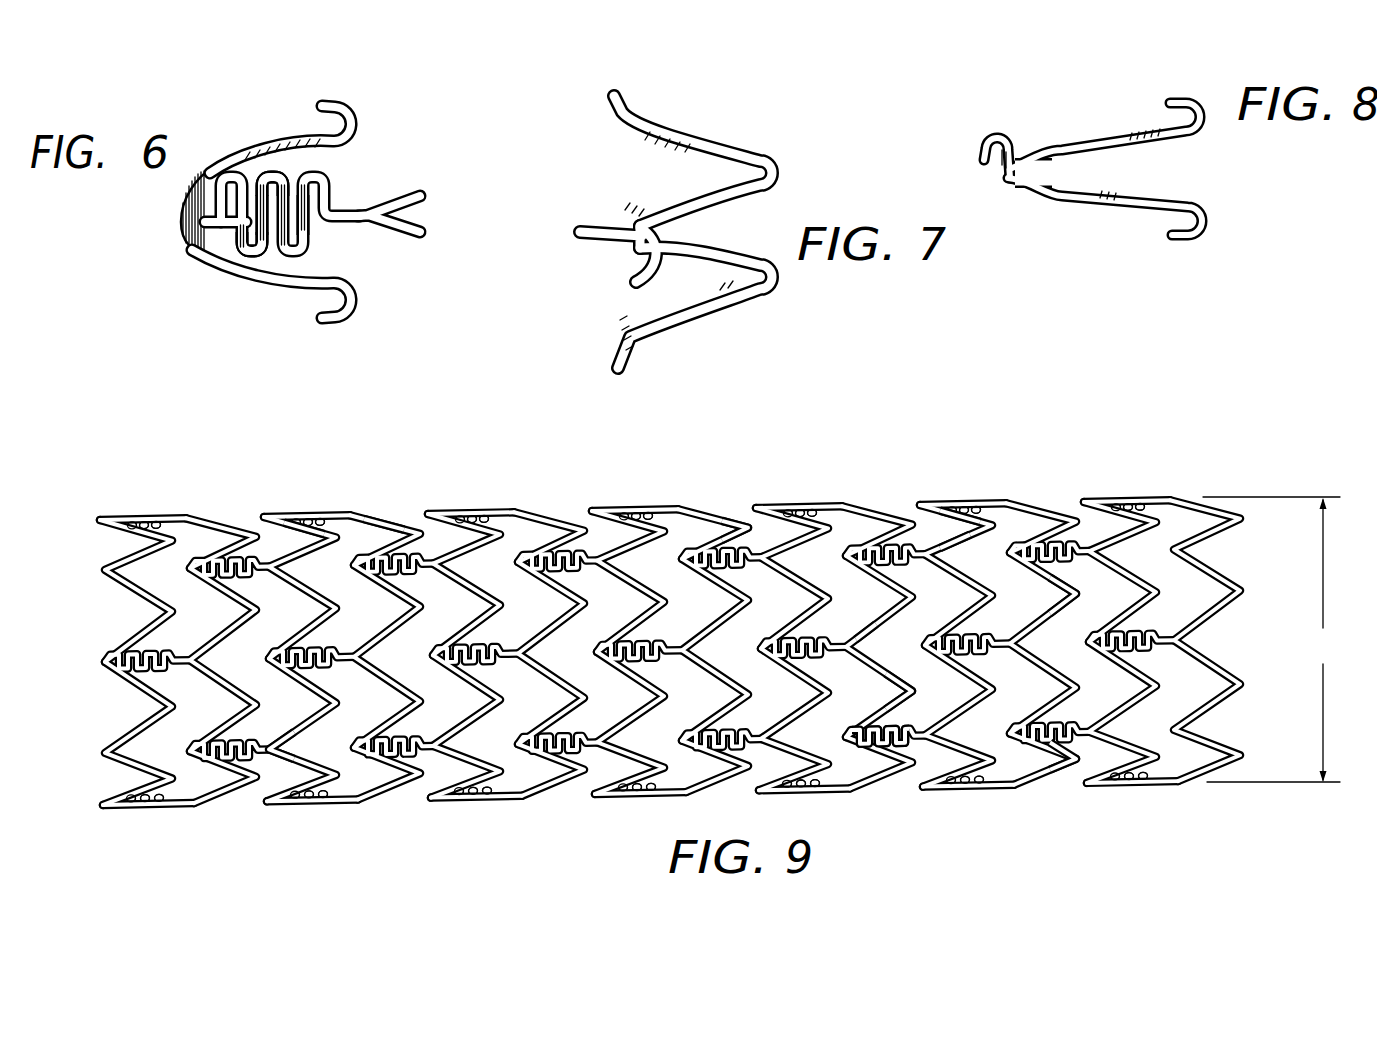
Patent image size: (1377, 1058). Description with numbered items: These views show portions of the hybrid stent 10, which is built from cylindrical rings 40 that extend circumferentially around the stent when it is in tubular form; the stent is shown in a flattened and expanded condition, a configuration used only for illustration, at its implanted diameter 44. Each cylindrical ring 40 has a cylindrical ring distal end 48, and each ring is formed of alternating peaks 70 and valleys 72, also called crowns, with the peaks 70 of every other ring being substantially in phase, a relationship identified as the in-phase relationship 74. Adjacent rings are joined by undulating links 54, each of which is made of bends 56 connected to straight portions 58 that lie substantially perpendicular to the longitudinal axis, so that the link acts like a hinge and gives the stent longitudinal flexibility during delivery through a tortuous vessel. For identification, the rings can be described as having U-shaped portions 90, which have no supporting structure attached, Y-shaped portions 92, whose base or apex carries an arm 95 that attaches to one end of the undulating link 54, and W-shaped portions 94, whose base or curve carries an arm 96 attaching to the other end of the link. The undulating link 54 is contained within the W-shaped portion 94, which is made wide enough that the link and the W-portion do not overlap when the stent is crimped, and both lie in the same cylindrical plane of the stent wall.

In FIG. 9, the hybrid stent 10 is at (803, 497).
In FIG. 9, the cylindrical ring 40 is at (223, 499).
In FIG. 9, the implanted diameter 44 is at (1271, 639).
In FIG. 9, the cylindrical ring distal end 48 is at (927, 543).
In FIG. 6, the undulating link 54 is at (300, 258).
In FIG. 9, the undulating link 54 is at (1073, 758).
In FIG. 6, the bend 56 is at (262, 258).
In FIG. 6, the straight portion 58 is at (250, 235).
In FIG. 9, the peak 70 is at (372, 530).
In FIG. 9, the valley 72 is at (278, 752).
In FIG. 9, the in-phase relationship 74 is at (747, 527).
In FIG. 7, the U-shaped portion 90 is at (747, 157).
In FIG. 9, the U-shaped portion 90 is at (913, 688).
In FIG. 7, the Y-shaped portion 92 is at (630, 280).
In FIG. 8, the Y-shaped portion 92 is at (1177, 197).
In FIG. 9, the Y-shaped portion 92 is at (850, 648).
In FIG. 6, the W-shaped portion 94 is at (248, 288).
In FIG. 9, the W-shaped portion 94 is at (865, 750).
In FIG. 6, the arm 95 is at (353, 200).
In FIG. 7, the arm 95 is at (587, 222).
In FIG. 8, the arm 95 is at (1023, 160).
In FIG. 6, the arm 96 is at (210, 190).